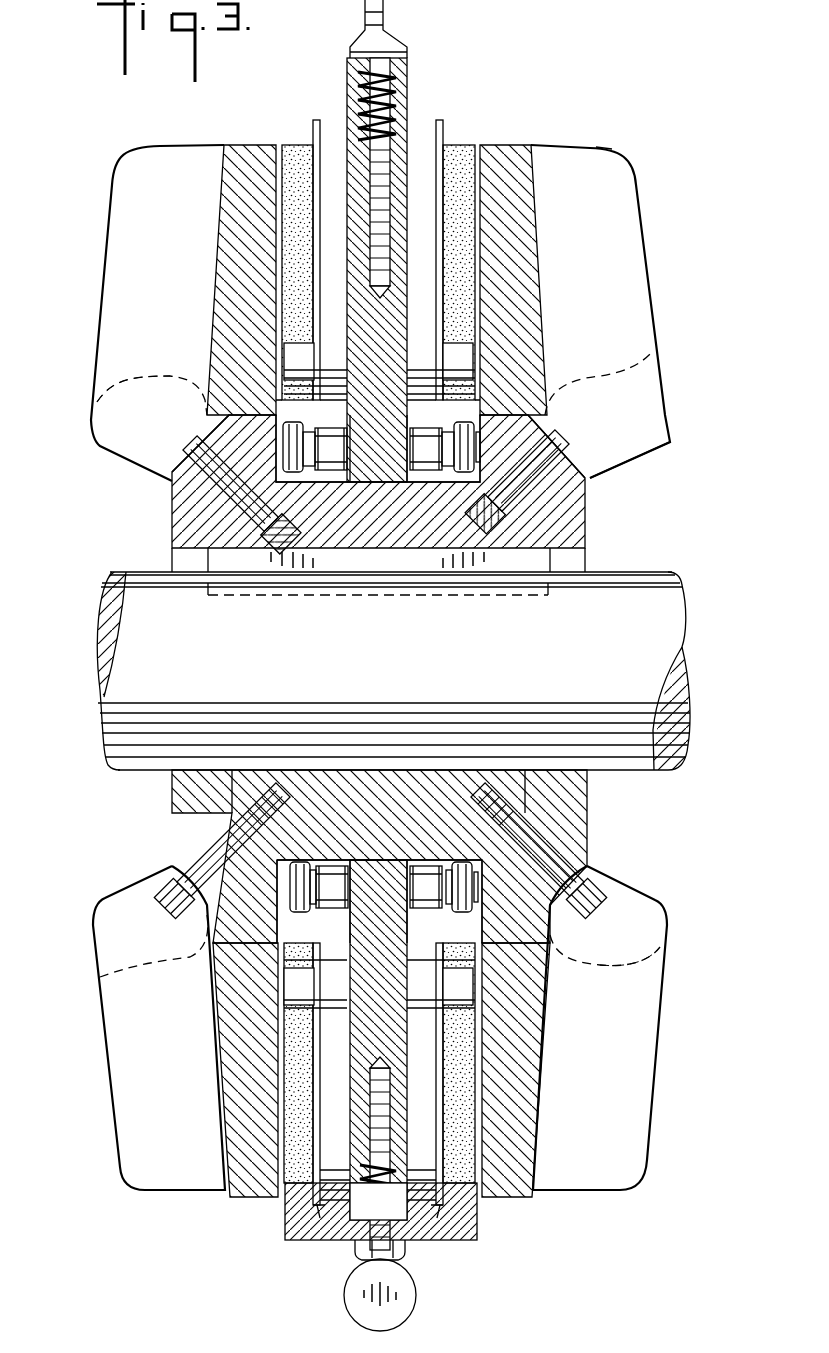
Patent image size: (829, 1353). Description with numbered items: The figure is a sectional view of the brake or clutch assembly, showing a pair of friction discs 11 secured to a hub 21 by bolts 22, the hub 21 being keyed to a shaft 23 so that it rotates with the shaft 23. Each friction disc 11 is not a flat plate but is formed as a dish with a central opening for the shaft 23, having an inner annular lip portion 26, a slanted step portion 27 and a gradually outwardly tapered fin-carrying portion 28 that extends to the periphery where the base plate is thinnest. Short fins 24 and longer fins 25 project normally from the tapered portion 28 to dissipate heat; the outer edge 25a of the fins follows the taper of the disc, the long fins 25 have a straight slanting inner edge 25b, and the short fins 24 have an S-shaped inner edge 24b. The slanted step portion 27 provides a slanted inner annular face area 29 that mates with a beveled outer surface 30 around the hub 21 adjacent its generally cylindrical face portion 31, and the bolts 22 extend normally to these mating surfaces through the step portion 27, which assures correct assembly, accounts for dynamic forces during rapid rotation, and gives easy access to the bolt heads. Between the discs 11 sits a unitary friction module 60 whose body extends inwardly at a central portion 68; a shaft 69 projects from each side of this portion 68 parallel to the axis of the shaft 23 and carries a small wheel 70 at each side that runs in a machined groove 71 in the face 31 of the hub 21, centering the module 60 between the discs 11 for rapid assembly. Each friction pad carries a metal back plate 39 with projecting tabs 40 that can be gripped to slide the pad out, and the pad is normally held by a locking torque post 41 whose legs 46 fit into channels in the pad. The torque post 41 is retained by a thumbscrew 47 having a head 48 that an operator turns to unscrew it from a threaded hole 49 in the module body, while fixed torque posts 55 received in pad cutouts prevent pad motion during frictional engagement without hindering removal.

The friction disc 11 is at (242, 146).
The hub 21 is at (520, 795).
The bolt 22 is at (180, 882).
The shaft 23 is at (666, 572).
The short fin 24 is at (598, 378).
The S-shaped inner edge 24b is at (95, 402).
The long fin 25 is at (662, 410).
The outer edge of fin 25a is at (660, 378).
The slanting inner edge 25b is at (655, 448).
The inner annular lip portion 26 is at (172, 520).
The slanted step portion 27 is at (192, 458).
The tapered fin-carrying portion 28 is at (216, 295).
The slanted inner annular face area 29 is at (262, 490).
The beveled outer surface 30 is at (290, 495).
The cylindrical face portion 31 is at (388, 486).
The metal back plate 39 is at (302, 150).
The tab 40 is at (316, 120).
The locking torque post 41 is at (443, 1242).
The leg 46 is at (290, 1185).
The thumbscrew 47 is at (398, 94).
The head 48 is at (410, 1312).
The threaded hole 49 is at (392, 280).
The fixed torque post 55 is at (286, 358).
The unitary friction module 60 is at (445, 98).
The central portion 68 is at (395, 422).
The shaft 69 is at (285, 440).
The wheel 70 is at (330, 428).
The machined groove 71 is at (330, 495).